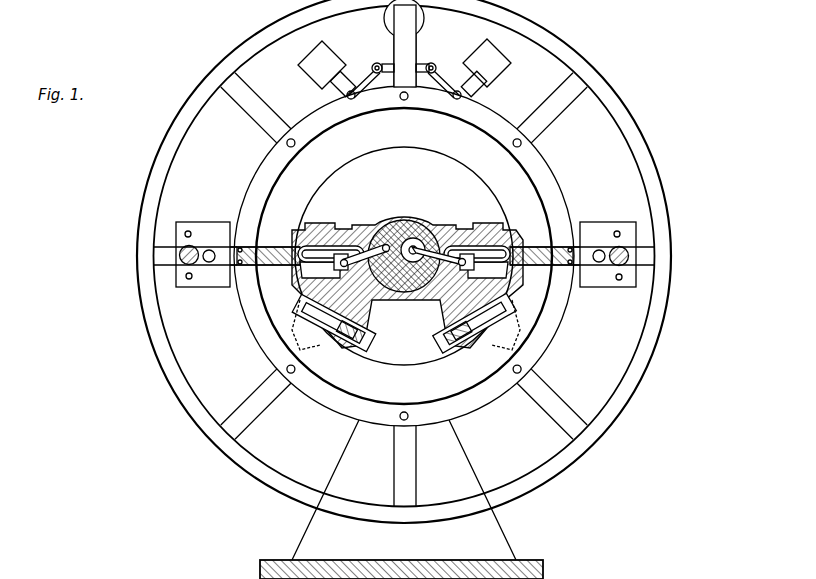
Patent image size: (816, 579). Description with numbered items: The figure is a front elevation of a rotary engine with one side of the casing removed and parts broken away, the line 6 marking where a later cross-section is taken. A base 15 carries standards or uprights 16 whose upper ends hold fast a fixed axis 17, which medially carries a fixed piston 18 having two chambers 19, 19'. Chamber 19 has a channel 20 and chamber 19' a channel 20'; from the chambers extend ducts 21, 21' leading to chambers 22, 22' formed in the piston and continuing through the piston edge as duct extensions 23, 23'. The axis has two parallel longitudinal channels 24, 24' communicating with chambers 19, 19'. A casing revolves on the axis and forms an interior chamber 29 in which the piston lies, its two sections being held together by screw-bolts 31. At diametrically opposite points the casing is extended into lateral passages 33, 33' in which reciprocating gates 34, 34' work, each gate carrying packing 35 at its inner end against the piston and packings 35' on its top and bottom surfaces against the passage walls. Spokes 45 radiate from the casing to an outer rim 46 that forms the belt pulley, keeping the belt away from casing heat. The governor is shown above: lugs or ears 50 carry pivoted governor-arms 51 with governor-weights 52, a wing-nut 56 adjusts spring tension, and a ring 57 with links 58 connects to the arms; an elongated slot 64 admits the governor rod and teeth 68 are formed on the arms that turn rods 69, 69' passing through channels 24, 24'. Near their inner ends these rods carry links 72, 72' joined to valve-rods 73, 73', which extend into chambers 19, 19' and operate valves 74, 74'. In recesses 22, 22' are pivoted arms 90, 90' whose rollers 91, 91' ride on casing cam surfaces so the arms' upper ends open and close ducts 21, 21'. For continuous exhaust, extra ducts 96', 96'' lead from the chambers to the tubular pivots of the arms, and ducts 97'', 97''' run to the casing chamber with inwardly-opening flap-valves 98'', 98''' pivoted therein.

The section line 6 is at (290, 304).
The base 15 is at (543, 562).
The standards or uprights 16 is at (500, 520).
The fixed axis 17 is at (412, 222).
The fixed piston 18 is at (390, 387).
The chamber 19 is at (407, 252).
The chamber 19' is at (493, 208).
The channel 20 is at (331, 221).
The channel 20' is at (489, 229).
The duct 21 is at (349, 286).
The duct 21' is at (459, 290).
The chamber 22 is at (378, 325).
The chamber 22' is at (432, 339).
The duct extension 23 is at (267, 328).
The duct extension 23' is at (544, 325).
The longitudinal channel 24 is at (404, 256).
The longitudinal channel 24' is at (460, 173).
The interior chamber 29 is at (410, 150).
The screw-bolts 31 is at (176, 258).
The lateral passage 33 is at (206, 271).
The lateral passage 33' is at (604, 271).
The reciprocating gate 34 is at (268, 234).
The reciprocating gate 34' is at (556, 231).
The packing 35 is at (412, 221).
The packings 35' is at (421, 259).
The spokes 45 is at (560, 112).
The outer rim 46 is at (663, 172).
The lugs or ears 50 is at (367, 73).
The governor-arms 51 is at (334, 92).
The governor-weights 52 is at (310, 72).
The wing-nut 56 is at (421, 24).
The ring 57 is at (433, 60).
The links 58 is at (377, 62).
The elongated slot 64 is at (201, 575).
The teeth 68 is at (237, 575).
The rod 69 is at (376, 363).
The rod 69' is at (438, 202).
The link 72 is at (406, 228).
The link 72' is at (457, 219).
The valve-rod 73 is at (365, 234).
The valve-rod 73' is at (439, 279).
The valve 74 is at (361, 213).
The valve 74' is at (497, 213).
The pivoted arm 90 is at (334, 333).
The pivoted arm 90' is at (475, 331).
The roller 91 is at (350, 350).
The roller 91' is at (457, 352).
The extra duct 96' is at (375, 310).
The extra duct 96'' is at (435, 325).
The duct 97'' is at (317, 373).
The duct 97''' is at (499, 390).
The flap-valve 98'' is at (263, 372).
The flap-valve 98''' is at (552, 349).